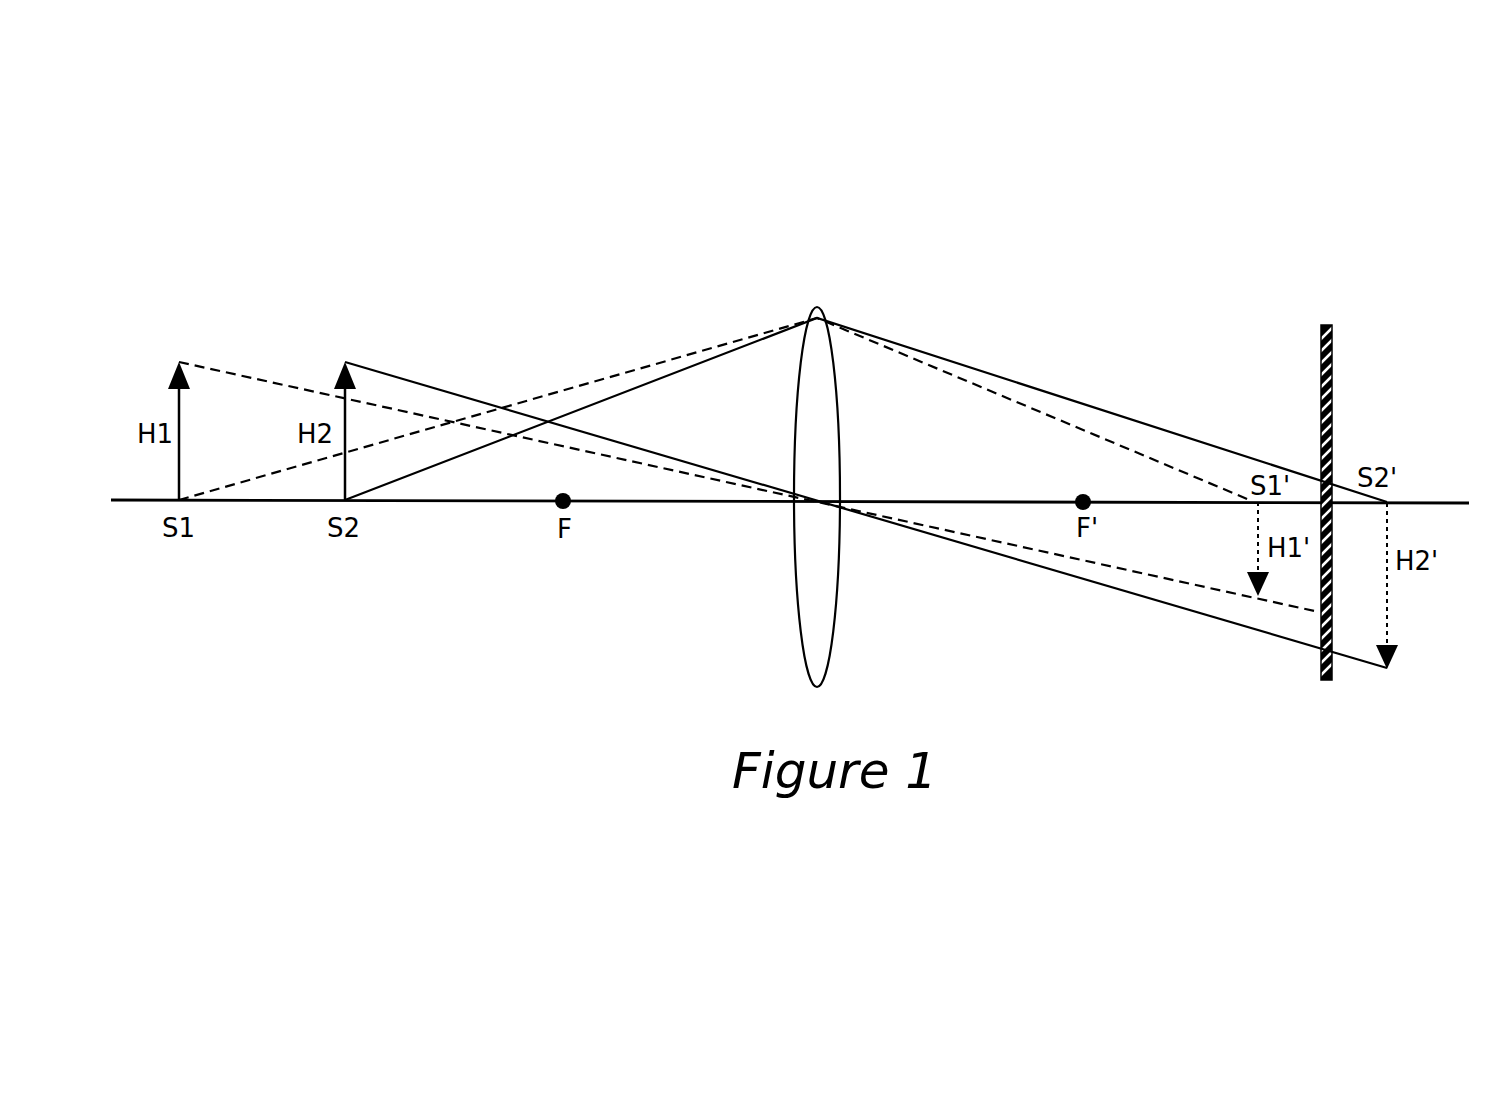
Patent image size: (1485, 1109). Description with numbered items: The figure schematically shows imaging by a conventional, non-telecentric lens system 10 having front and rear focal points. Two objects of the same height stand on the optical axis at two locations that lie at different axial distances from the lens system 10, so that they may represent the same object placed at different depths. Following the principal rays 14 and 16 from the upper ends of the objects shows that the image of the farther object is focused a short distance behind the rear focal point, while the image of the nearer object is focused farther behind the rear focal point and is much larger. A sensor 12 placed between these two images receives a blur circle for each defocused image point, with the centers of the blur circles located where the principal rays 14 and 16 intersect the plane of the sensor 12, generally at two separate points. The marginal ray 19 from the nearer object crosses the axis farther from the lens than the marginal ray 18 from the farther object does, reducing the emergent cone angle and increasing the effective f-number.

The lens system 10 is at (817, 482).
The sensor 12 is at (1333, 488).
The principal ray 14 is at (749, 487).
The principal ray 16 is at (866, 515).
The marginal ray 18 is at (715, 409).
The marginal ray 19 is at (866, 410).